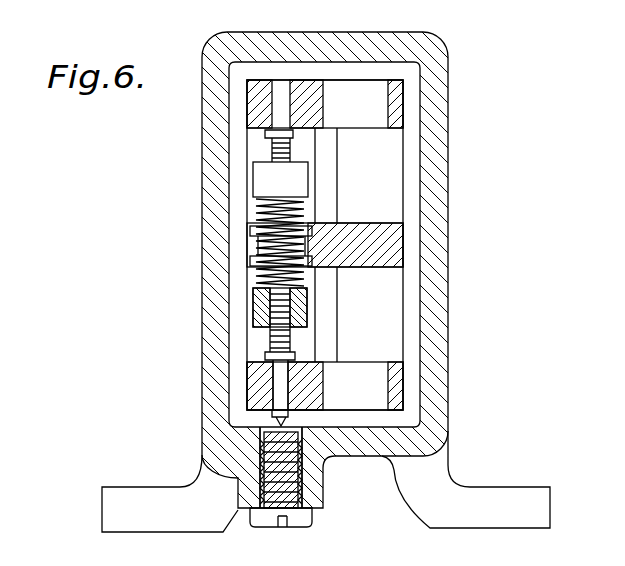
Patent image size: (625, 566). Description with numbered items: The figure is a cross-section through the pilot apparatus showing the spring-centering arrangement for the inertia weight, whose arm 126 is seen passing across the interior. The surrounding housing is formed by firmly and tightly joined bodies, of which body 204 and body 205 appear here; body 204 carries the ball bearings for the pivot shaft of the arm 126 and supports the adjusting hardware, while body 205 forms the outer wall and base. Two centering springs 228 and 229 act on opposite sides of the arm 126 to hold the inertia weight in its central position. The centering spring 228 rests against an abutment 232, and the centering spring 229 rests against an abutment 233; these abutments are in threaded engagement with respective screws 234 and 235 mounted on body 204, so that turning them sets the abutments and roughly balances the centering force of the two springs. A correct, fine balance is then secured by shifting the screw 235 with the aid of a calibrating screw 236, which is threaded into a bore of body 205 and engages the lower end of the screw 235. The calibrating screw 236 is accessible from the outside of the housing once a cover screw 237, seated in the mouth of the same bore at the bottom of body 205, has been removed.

The arm 126 is at (393, 244).
The body 204 is at (395, 107).
The body 205 is at (440, 184).
The centering spring 228 is at (258, 209).
The centering spring 229 is at (258, 278).
The abutment 232 is at (254, 175).
The abutment 233 is at (256, 301).
The screw 234 is at (272, 146).
The screw 235 is at (272, 343).
The calibrating screw 236 is at (262, 441).
The cover screw 237 is at (305, 522).